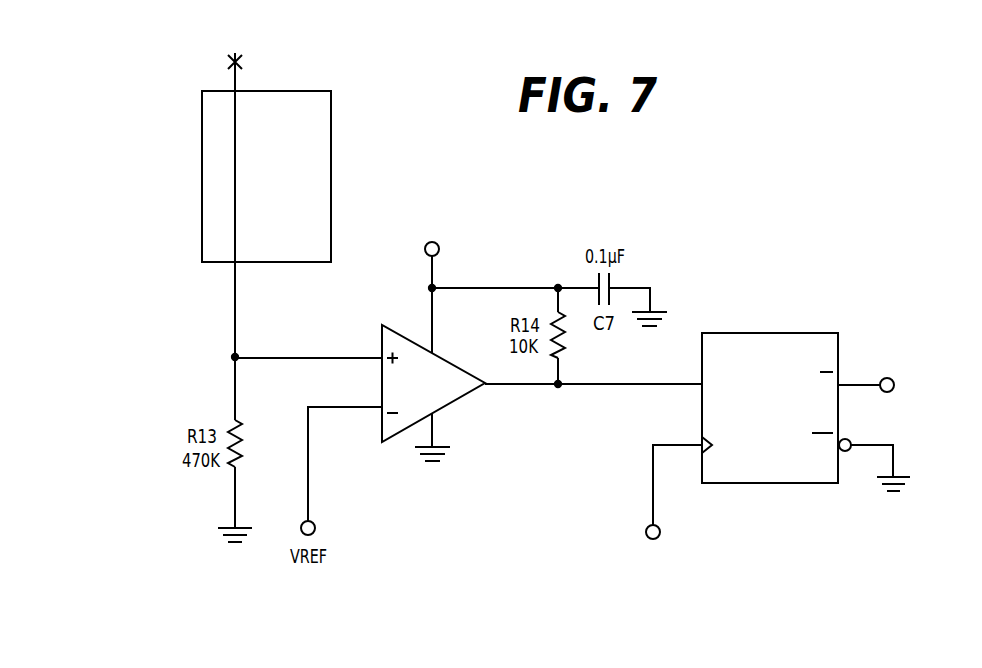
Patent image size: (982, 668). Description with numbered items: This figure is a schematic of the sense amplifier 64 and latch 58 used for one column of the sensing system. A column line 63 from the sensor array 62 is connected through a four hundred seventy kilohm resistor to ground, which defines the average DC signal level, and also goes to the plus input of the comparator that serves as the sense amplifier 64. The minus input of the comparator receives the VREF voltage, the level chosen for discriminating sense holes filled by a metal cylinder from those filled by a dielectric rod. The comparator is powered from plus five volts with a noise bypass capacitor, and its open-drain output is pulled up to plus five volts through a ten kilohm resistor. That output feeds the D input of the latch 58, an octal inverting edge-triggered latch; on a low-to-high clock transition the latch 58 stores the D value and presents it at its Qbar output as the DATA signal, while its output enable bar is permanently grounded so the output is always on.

The sensor array 62 is at (297, 91).
The column line 63 is at (235, 305).
The sense amplifier 64 is at (346, 318).
The latch 58 is at (797, 333).